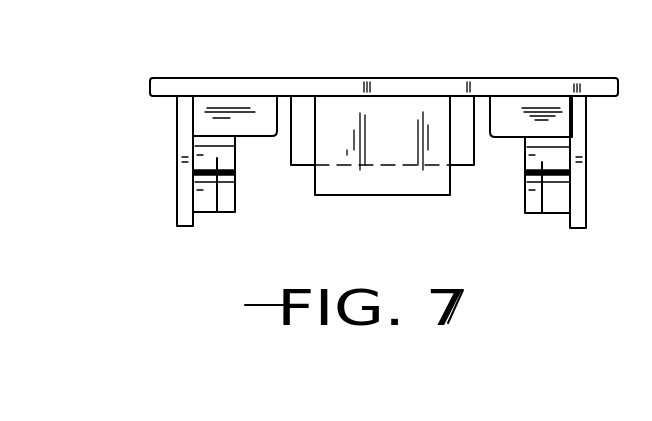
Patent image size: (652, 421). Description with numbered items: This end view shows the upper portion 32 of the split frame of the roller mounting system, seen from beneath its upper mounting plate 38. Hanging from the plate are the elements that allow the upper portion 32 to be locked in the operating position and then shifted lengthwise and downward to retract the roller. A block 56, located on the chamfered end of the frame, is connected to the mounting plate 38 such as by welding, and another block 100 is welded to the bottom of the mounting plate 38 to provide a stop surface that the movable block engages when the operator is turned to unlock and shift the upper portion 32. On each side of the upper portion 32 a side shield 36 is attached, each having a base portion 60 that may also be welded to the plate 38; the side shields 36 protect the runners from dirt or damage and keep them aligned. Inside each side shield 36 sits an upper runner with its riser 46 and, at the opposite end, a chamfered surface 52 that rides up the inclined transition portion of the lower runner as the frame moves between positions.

The upper portion 32 is at (133, 96).
The side shield 36 is at (586, 208).
The upper mounting plate 38 is at (594, 78).
The riser 46 is at (235, 210).
The chamfered surface 52 is at (217, 212).
The block 56 is at (377, 182).
The base portion 60 is at (197, 113).
The block 100 is at (457, 158).